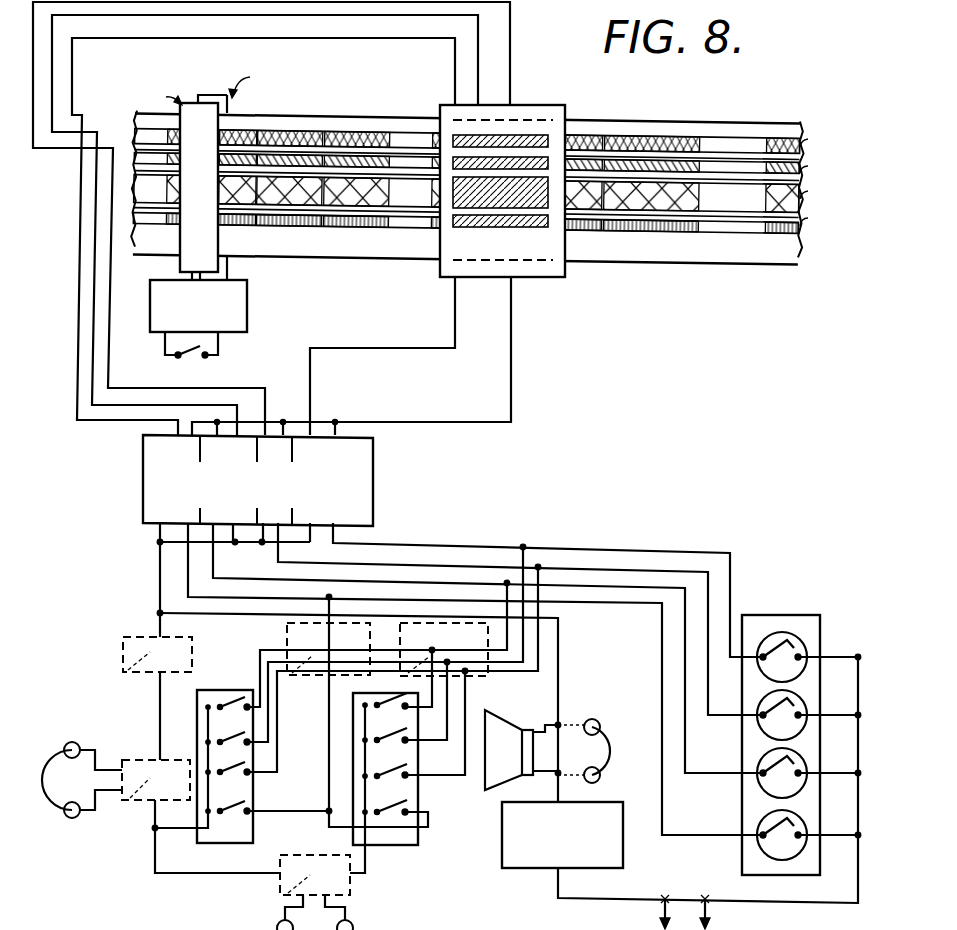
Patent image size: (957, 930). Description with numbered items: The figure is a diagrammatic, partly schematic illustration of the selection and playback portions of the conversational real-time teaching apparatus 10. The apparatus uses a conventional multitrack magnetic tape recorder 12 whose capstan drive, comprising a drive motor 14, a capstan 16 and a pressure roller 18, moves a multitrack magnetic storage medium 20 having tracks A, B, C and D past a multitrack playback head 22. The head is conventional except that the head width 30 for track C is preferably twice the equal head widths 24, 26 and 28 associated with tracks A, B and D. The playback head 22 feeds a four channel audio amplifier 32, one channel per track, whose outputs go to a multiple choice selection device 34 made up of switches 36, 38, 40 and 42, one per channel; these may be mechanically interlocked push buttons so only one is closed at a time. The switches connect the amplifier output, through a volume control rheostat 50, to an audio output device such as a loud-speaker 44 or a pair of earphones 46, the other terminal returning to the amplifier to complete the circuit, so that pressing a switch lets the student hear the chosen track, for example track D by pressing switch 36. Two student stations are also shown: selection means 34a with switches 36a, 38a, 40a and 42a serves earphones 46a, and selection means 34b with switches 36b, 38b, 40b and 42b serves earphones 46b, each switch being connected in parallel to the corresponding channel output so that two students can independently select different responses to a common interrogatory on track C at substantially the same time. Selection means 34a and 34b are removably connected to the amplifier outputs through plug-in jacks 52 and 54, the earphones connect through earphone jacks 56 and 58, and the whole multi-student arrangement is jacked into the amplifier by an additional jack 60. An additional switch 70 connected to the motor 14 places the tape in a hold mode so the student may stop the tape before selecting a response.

The teaching apparatus 10 is at (682, 449).
The multitrack magnetic tape recorder 12 is at (676, 271).
The drive motor 14 is at (247, 297).
The capstan 16 is at (205, 95).
The pressure roller 18 is at (178, 259).
The multitrack magnetic storage medium 20 is at (678, 123).
The multitrack playback head 22 is at (535, 105).
The head width 24 is at (465, 133).
The head width 26 is at (551, 165).
The head width 28 is at (535, 232).
The head width 30 is at (452, 202).
The four channel audio amplifier 32 is at (375, 466).
The multiple choice selection device 34 is at (806, 614).
The switch 36 is at (802, 648).
The switch 38 is at (800, 707).
The switch 40 is at (800, 764).
The switch 42 is at (800, 825).
The selection means 34a is at (222, 843).
The switch 36a is at (226, 697).
The switch 38a is at (218, 735).
The switch 40a is at (248, 769).
The switch 42a is at (250, 809).
The selection means 34b is at (380, 847).
The switch 36b is at (407, 694).
The switch 38b is at (377, 738).
The switch 40b is at (408, 771).
The switch 42b is at (408, 808).
The loud-speaker 44 is at (484, 780).
The pair of earphones 46 is at (596, 719).
The pair of earphones 46a is at (72, 818).
The pair of earphones 46b is at (352, 924).
The rheostat 50 is at (623, 829).
The plug-in type jack 52 is at (287, 641).
The plug-in type jack 54 is at (488, 676).
The earphone jack 56 is at (140, 800).
The earphone jack 58 is at (350, 886).
The plug-in type jack 60 is at (123, 652).
The switch 70 is at (191, 365).